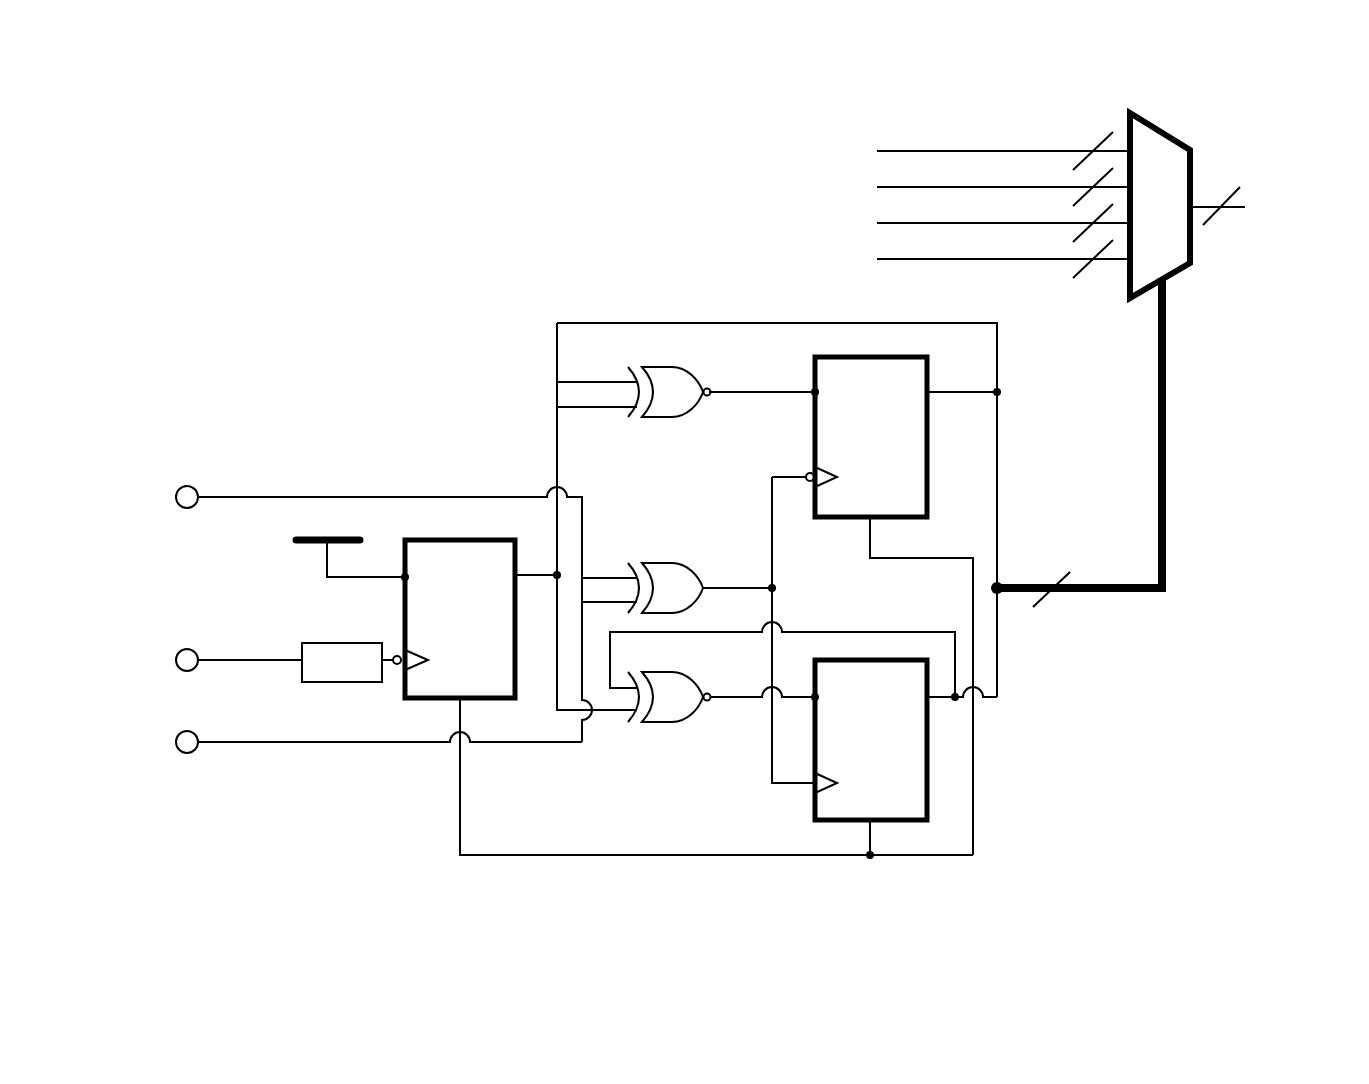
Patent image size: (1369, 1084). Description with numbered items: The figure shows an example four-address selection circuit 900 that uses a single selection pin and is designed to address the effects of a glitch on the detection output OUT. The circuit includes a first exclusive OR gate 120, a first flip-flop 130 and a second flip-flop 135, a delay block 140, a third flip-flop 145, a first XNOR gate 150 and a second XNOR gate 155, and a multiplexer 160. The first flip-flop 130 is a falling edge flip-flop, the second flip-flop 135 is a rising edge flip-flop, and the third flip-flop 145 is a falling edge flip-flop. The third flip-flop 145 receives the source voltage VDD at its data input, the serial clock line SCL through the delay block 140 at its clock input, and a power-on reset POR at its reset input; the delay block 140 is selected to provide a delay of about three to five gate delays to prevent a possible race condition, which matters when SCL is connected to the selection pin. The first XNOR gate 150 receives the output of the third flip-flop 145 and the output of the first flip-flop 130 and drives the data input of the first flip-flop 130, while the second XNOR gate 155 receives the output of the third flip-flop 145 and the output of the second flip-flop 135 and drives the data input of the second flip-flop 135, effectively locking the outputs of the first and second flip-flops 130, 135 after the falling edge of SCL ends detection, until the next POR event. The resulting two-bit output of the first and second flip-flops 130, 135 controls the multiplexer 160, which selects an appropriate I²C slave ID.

The four-address selection circuit 900 is at (1283, 128).
The multiplexer (MUX) 160 is at (1190, 266).
The first XNOR gate 150 is at (701, 403).
The first exclusive OR (XOR) gate 120 is at (701, 598).
The second XNOR gate 155 is at (701, 708).
The first flip-flop 130 is at (905, 520).
The second flip-flop 135 is at (905, 822).
The third flip-flop 145 is at (497, 701).
The delay block 140 is at (315, 681).